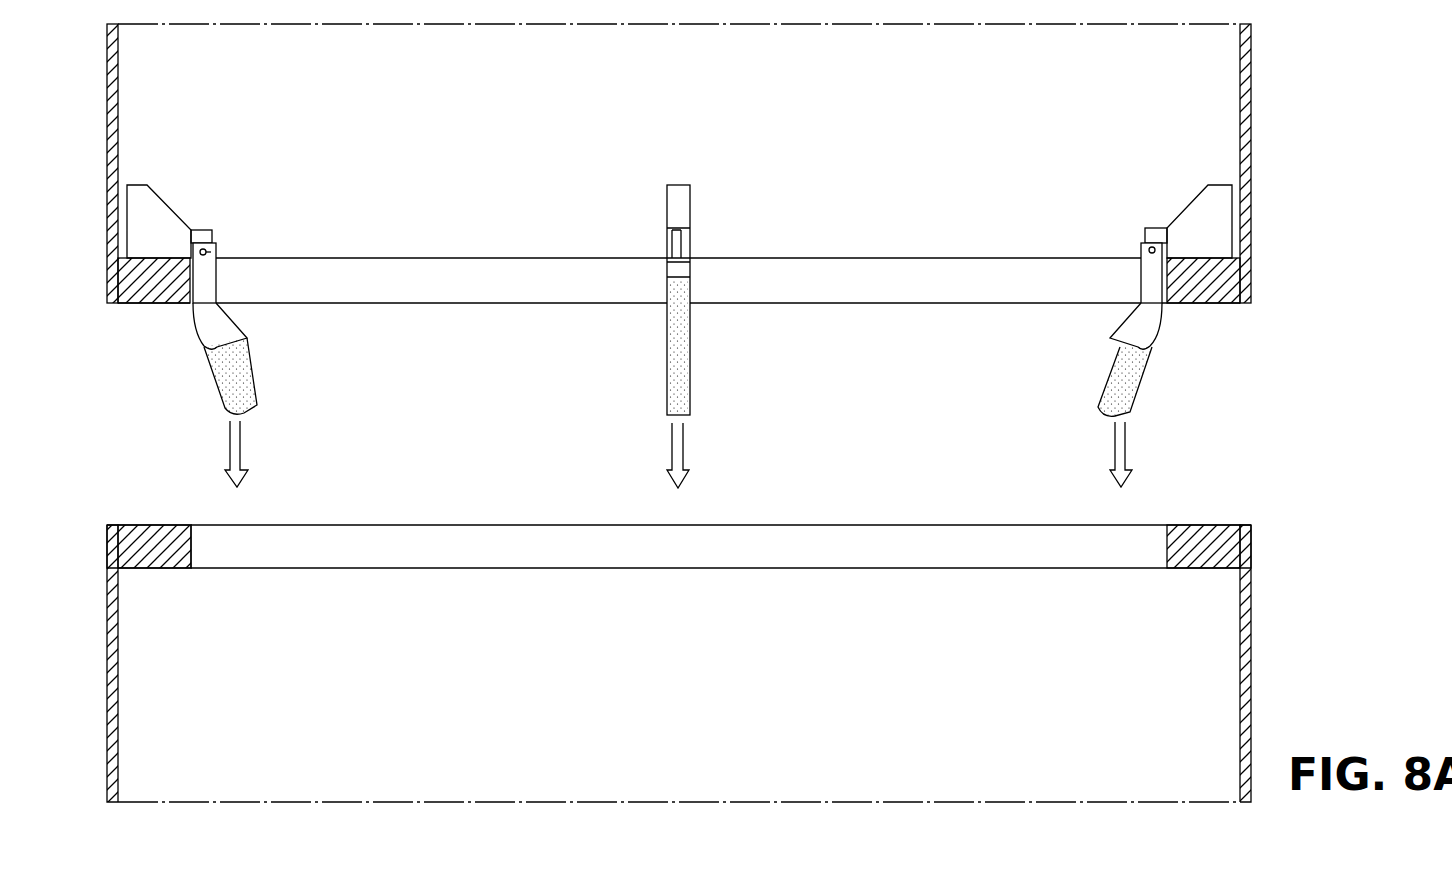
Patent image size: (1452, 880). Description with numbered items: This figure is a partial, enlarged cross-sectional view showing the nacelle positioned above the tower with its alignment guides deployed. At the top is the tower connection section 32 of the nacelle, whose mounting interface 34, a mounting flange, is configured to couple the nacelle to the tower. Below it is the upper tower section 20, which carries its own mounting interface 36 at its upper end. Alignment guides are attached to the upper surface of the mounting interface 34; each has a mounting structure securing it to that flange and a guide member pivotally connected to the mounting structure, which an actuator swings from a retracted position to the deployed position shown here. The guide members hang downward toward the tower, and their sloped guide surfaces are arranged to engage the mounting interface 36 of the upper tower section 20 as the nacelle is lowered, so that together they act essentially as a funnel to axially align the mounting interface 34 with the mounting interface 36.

The upper tower section 20 is at (650, 644).
The tower connection section 32 is at (107, 165).
The mounting interface 34 is at (160, 298).
The mounting interface 36 is at (148, 525).